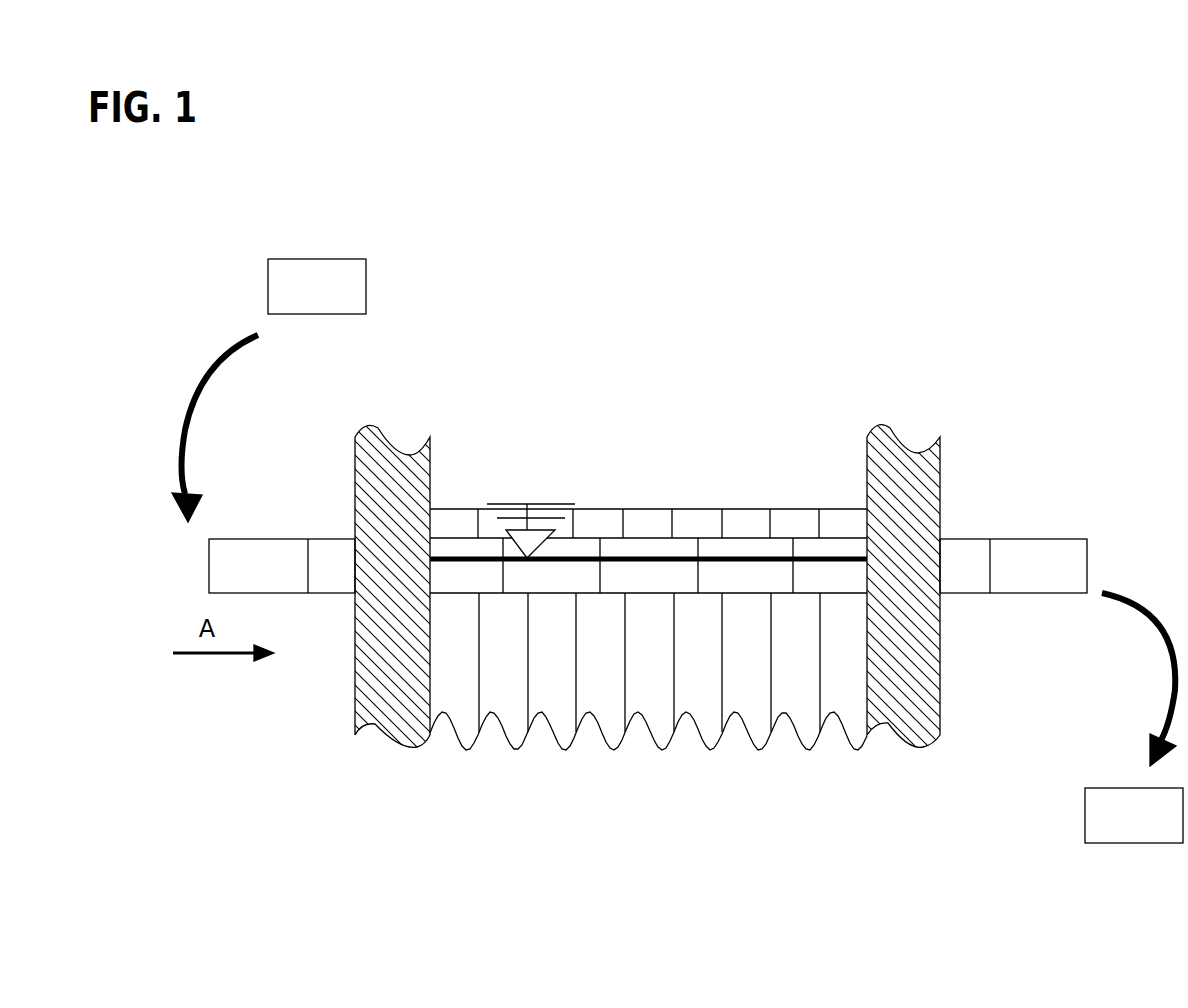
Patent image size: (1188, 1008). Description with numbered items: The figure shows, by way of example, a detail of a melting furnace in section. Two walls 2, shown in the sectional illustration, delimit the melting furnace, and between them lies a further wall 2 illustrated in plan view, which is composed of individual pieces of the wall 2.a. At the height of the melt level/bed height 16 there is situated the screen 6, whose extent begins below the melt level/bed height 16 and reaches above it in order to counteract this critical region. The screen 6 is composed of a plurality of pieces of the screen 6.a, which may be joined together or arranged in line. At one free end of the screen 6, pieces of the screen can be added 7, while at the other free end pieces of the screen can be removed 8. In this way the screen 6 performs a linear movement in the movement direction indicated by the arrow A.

The wall 2 is at (382, 435).
The pieces of the wall 2.a is at (662, 710).
The screen 6 is at (648, 572).
The pieces of the screen 6.a is at (263, 573).
The addition of one piece of the screen 7 is at (325, 297).
The removal of one piece of the screen 8 is at (1104, 818).
The melt level/bed height 16 is at (645, 558).